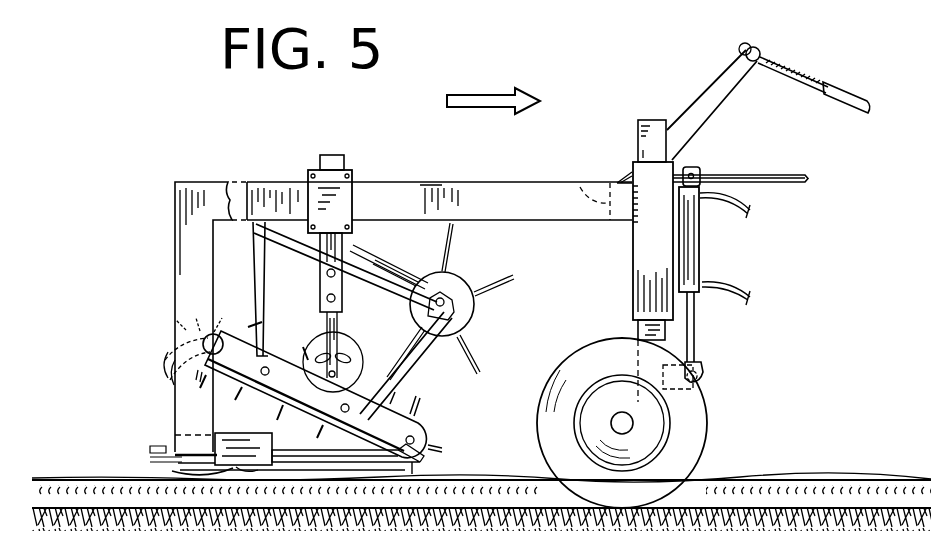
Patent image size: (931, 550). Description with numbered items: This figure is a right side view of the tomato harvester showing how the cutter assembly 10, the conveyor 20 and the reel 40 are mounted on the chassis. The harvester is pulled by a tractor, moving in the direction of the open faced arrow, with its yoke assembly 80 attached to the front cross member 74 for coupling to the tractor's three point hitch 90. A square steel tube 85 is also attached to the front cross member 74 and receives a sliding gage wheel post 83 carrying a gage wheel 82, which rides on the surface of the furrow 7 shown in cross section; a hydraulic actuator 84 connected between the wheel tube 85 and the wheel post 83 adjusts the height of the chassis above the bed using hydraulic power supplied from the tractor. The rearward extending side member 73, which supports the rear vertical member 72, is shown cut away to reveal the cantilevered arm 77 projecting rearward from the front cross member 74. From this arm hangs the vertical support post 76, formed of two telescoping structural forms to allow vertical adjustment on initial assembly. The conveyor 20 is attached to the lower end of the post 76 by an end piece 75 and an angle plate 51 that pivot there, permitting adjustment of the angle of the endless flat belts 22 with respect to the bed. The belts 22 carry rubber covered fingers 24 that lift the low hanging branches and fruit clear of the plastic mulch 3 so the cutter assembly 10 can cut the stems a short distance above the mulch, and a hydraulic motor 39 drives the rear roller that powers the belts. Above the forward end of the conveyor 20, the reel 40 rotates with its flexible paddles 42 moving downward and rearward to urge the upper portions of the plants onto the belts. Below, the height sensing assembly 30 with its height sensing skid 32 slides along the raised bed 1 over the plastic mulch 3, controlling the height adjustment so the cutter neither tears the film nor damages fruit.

The seed bed 1 is at (120, 478).
The plastic mulch 3 is at (100, 478).
The furrows 7 is at (745, 507).
The cutter assembly 10 is at (290, 450).
The lifter and conveyor 20 is at (448, 398).
The endless flat belts 22 is at (402, 412).
The rubber covered fingers 24 is at (440, 444).
The height sensing assembly 30 is at (228, 433).
The skid 32 is at (200, 477).
The hydraulic motor 39 is at (205, 330).
The reel 40 is at (503, 303).
The flexible paddles 42 is at (478, 372).
The angle plates 51 is at (355, 372).
The rear vertical members 72 is at (178, 313).
The rearward extending side members 73 is at (218, 182).
The front cross member 74 is at (592, 190).
The end pieces 75 is at (316, 398).
The vertical support post 76 is at (320, 278).
The cantilevered arm 77 is at (378, 190).
The yoke assembly 80 is at (720, 98).
The gage wheels 82 is at (703, 420).
The gage wheel post 83 is at (645, 338).
The hydraulic actuator 84 is at (705, 256).
The square steel tube 85 is at (633, 252).
The three point hitch 90 is at (840, 100).